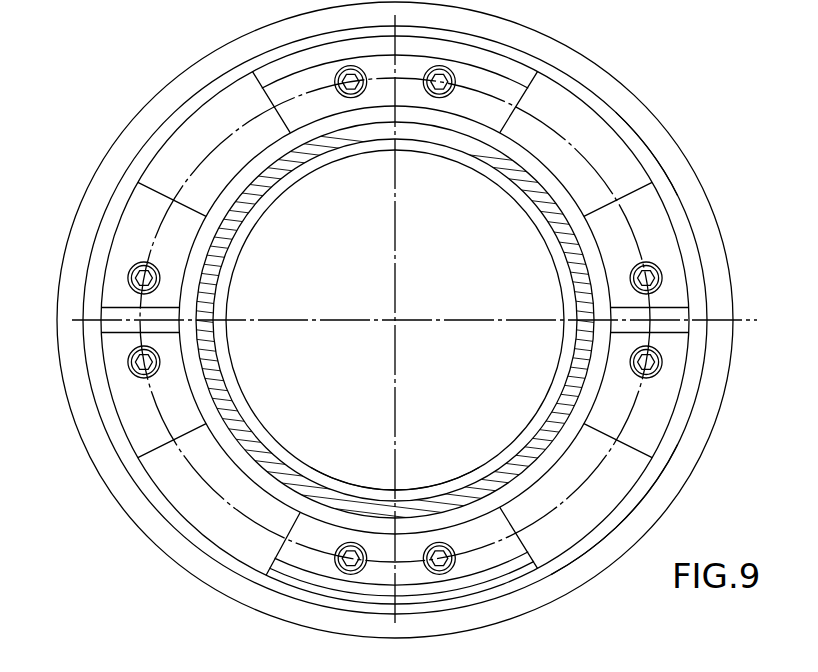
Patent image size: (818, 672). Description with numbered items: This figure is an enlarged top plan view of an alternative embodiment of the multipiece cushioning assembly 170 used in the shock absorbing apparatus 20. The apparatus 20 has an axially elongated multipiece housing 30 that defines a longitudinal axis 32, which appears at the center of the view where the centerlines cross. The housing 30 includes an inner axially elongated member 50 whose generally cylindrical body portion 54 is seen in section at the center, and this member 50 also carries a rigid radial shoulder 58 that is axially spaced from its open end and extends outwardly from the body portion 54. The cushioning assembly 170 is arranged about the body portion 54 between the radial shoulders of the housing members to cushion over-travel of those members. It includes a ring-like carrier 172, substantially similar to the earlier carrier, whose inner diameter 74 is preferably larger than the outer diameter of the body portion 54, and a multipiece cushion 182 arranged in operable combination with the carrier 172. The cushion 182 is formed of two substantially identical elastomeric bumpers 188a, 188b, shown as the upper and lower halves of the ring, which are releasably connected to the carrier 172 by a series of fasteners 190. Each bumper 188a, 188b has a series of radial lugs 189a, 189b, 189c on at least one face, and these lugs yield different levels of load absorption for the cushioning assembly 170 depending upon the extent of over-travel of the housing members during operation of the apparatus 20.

The shock absorbing apparatus 20 is at (181, 60).
The multipiece housing 30 is at (152, 588).
The longitudinal axis 32 is at (399, 306).
The second or inner axially elongated member 50 is at (328, 463).
The axially elongated hollow body portion 54 is at (492, 487).
The rigid radial shoulder 58 is at (596, 556).
The inner diameter 74 is at (230, 197).
The cushioning assembly 170 is at (638, 118).
The carrier 172 is at (653, 500).
The multipiece cushion 182 is at (115, 206).
The elastomeric cushion or bumper 188a is at (263, 538).
The elastomeric cushion or bumper 188b is at (500, 78).
The radial lug 189a is at (115, 253).
The radial lug 189b is at (487, 120).
The radial lug 189c is at (650, 226).
The fasteners 190 is at (437, 96).